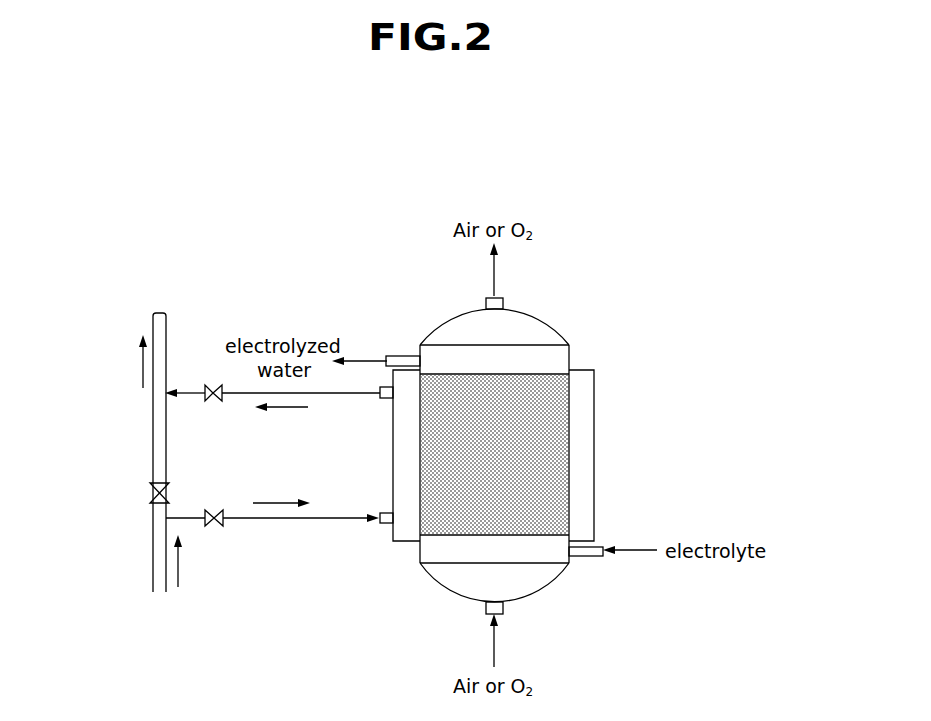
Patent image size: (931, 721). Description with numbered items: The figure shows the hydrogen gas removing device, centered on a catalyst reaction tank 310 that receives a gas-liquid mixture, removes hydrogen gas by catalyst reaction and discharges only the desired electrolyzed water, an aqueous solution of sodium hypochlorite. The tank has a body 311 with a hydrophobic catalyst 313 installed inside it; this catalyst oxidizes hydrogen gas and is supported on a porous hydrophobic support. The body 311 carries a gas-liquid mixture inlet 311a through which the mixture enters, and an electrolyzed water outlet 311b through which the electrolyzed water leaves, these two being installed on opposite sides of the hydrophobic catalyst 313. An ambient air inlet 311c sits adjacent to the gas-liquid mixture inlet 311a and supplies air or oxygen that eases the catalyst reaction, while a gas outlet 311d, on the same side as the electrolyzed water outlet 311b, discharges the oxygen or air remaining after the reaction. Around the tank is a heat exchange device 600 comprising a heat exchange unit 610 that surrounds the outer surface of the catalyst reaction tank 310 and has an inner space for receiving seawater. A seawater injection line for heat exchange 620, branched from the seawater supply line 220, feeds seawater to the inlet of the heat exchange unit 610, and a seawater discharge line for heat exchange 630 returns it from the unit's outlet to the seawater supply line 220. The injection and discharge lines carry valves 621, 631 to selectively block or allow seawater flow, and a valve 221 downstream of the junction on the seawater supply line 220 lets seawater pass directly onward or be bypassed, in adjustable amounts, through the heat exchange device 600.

The seawater supply line 220 is at (153, 568).
The valve 221 is at (150, 493).
The catalyst reaction tank 310 is at (436, 305).
The body 311 is at (571, 359).
The gas-liquid mixture inlet 311a is at (594, 557).
The electrolyzed water outlet 311b is at (396, 356).
The ambient air inlet 311c is at (503, 608).
The gas outlet 311d is at (503, 301).
The hydrophobic catalyst 313 is at (561, 408).
The heat exchange device 600 is at (388, 557).
The heat exchange unit 610 is at (588, 465).
The seawater injection line for heat exchange 620 is at (310, 520).
The valve 621 is at (213, 510).
The seawater discharge line for heat exchange 630 is at (337, 396).
The valve 631 is at (217, 385).